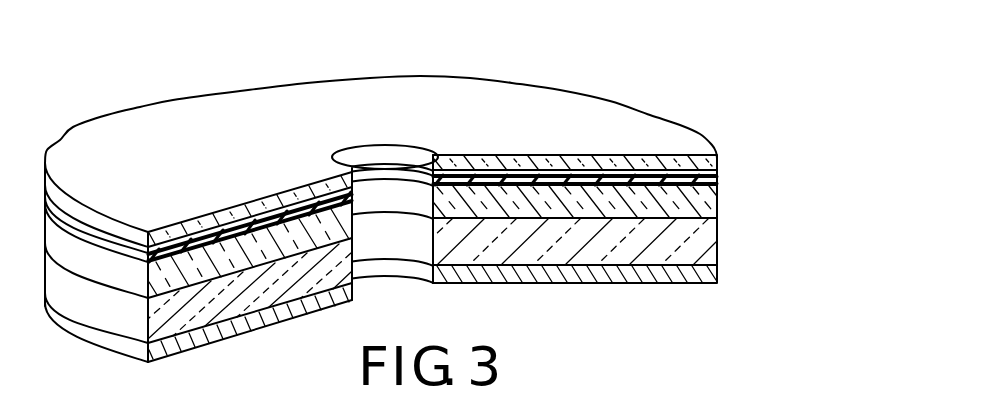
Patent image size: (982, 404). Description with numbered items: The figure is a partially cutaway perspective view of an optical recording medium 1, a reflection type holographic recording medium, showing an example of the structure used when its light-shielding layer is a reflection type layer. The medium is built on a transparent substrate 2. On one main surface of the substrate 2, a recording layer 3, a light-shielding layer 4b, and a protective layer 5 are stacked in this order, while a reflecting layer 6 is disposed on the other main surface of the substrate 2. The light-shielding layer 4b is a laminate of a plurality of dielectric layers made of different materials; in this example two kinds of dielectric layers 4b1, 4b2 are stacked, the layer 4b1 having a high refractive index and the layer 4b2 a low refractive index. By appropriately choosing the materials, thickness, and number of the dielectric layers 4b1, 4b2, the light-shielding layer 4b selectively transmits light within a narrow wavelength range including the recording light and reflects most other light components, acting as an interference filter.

The optical recording medium 1 is at (675, 103).
The protective layer 5 is at (718, 160).
The light-shielding layer 4b is at (453, 201).
The dielectric layer 4b2 is at (718, 172).
The dielectric layer 4b1 is at (718, 180).
The recording layer 3 is at (718, 204).
The transparent substrate 2 is at (718, 242).
The reflecting layer 6 is at (718, 271).